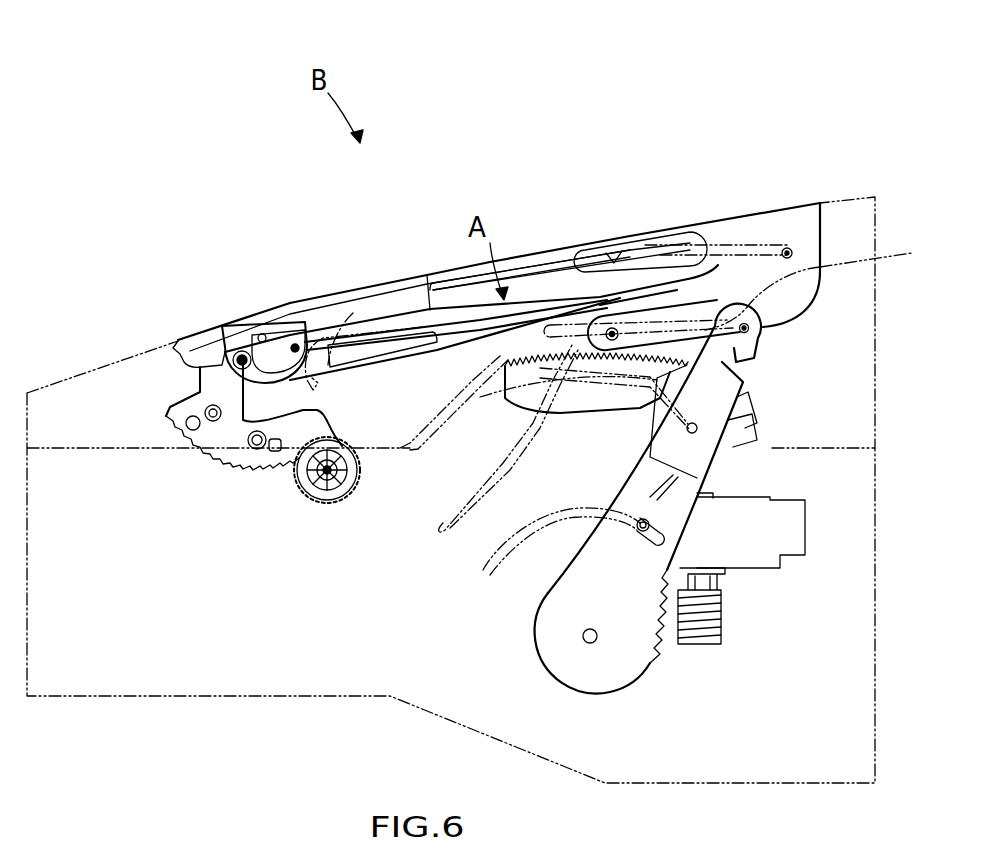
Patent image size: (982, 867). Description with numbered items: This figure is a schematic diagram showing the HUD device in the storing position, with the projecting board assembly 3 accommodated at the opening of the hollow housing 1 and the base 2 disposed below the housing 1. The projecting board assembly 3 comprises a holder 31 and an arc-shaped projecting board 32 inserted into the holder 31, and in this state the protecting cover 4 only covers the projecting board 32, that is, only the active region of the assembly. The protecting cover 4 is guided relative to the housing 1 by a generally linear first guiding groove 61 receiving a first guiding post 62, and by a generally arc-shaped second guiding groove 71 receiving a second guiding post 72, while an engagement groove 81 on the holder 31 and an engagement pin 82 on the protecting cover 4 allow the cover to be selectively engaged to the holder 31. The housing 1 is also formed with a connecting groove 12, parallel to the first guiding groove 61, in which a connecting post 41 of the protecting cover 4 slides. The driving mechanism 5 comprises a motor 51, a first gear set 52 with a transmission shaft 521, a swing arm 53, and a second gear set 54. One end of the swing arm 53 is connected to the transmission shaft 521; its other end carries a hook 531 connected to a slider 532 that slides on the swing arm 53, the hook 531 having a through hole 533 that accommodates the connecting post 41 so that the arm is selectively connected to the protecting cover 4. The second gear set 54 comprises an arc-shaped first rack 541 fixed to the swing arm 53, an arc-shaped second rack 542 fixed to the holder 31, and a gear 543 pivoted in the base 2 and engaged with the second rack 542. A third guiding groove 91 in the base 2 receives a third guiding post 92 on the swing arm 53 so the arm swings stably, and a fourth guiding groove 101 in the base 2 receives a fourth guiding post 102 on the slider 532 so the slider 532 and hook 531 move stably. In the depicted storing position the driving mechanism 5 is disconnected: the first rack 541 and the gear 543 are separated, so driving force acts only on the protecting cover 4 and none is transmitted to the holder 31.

The housing 1 is at (878, 297).
The base 2 is at (878, 622).
The projecting board assembly 3 is at (208, 318).
The protecting cover 4 is at (724, 213).
The driving mechanism 5 is at (668, 552).
The connecting groove 12 is at (823, 283).
The holder 31 is at (193, 346).
The projecting board 32 is at (550, 287).
The connecting post 41 is at (762, 332).
The motor 51 is at (792, 528).
The first gear set 52 is at (695, 647).
The swing arm 53 is at (612, 672).
The second gear set 54 is at (270, 480).
The first guiding groove 61 is at (745, 245).
The first guiding post 62 is at (790, 246).
The second guiding groove 71 is at (353, 313).
The second guiding post 72 is at (610, 330).
The engagement groove 81 is at (318, 300).
The engagement pin 82 is at (620, 258).
The third guiding groove 91 is at (485, 572).
The third guiding post 92 is at (637, 527).
The fourth guiding groove 101 is at (440, 528).
The fourth guiding post 102 is at (698, 432).
The transmission shaft 521 is at (583, 636).
The hook 531 is at (755, 347).
The slider 532 is at (745, 398).
The through hole 533 is at (740, 378).
The first rack 541 is at (598, 390).
The second rack 542 is at (232, 456).
The gear 543 is at (333, 507).